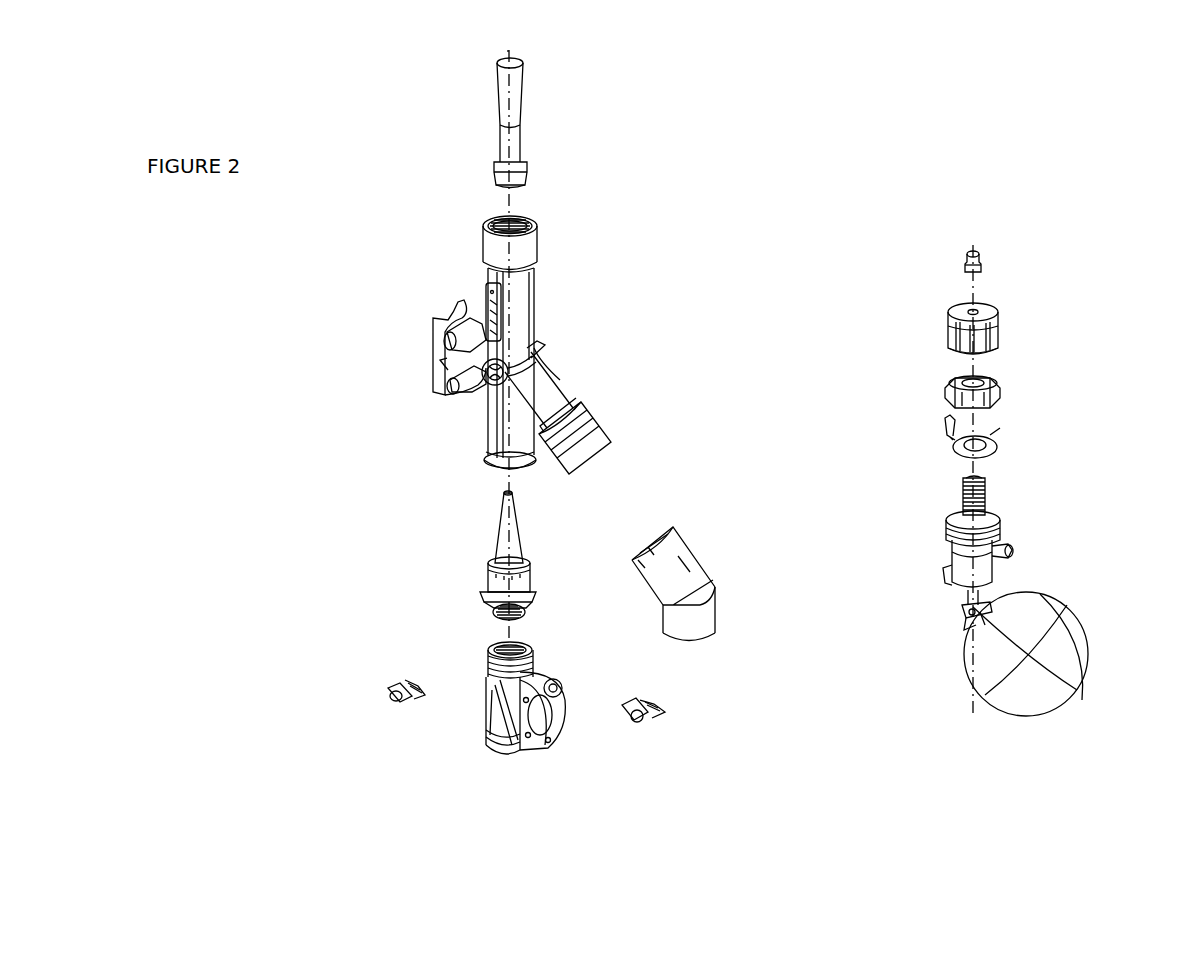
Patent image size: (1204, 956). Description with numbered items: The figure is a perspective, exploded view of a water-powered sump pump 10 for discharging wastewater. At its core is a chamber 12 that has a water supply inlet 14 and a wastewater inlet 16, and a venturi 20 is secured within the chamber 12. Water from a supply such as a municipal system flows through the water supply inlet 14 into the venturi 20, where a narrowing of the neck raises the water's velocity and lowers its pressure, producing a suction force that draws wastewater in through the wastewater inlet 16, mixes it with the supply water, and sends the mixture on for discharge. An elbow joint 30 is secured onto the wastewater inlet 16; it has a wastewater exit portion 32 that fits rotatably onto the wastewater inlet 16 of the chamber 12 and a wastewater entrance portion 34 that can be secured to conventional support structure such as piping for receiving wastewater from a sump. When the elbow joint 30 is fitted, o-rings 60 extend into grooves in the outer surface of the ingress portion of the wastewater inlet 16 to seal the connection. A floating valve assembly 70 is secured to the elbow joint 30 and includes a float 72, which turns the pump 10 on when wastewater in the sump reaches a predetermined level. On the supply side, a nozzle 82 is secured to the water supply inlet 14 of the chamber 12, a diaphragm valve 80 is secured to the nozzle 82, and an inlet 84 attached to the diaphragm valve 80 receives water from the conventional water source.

The water-powered sump pump 10 is at (365, 332).
The chamber 12 is at (522, 302).
The water supply inlet 14 is at (473, 487).
The wastewater inlet 16 is at (592, 467).
The venturi 20 is at (526, 98).
The elbow joint 30 is at (690, 567).
The wastewater exit portion 32 is at (650, 543).
The wastewater entrance portion 34 is at (708, 640).
The o-rings 60 is at (588, 418).
The floating valve assembly 70 is at (1012, 546).
The float 72 is at (1090, 658).
The diaphragm valve 80 is at (590, 657).
The nozzle 82 is at (492, 547).
The inlet 84 is at (497, 760).